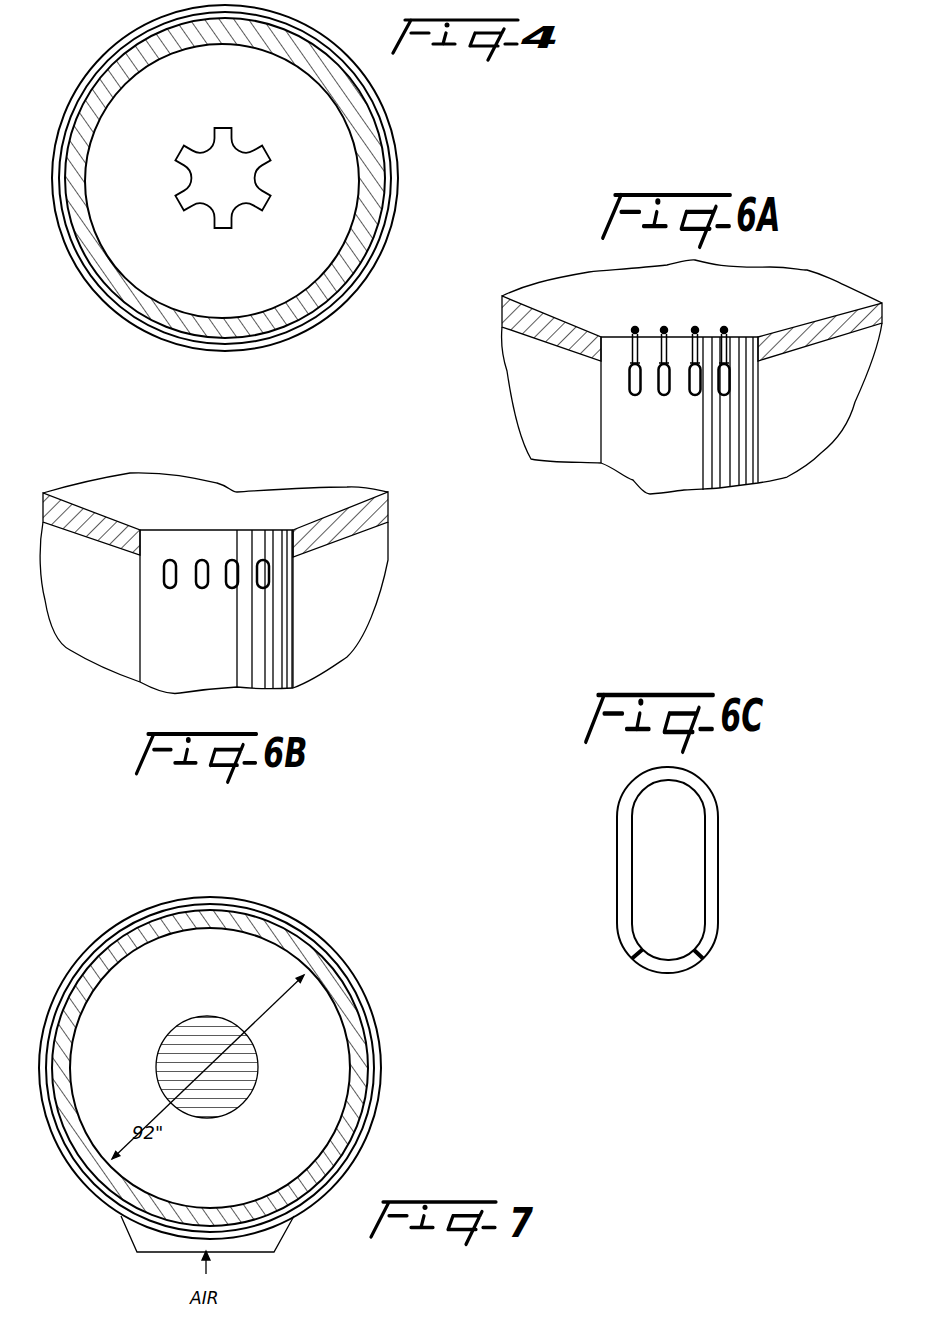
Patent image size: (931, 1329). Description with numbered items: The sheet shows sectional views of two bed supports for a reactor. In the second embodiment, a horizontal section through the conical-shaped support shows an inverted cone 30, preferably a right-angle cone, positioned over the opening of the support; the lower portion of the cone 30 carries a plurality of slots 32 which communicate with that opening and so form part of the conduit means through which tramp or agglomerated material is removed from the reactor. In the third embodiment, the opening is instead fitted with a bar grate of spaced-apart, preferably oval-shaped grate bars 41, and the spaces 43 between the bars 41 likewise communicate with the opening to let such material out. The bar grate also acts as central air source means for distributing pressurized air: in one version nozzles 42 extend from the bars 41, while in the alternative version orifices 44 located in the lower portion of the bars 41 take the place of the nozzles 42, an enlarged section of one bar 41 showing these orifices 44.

In FIG. 4, the inverted cone 30 is at (200, 188).
In FIG. 4, the slots 32 is at (182, 175).
In FIG. 6A, the grate bars 41 is at (630, 376).
In FIG. 6B, the grate bars 41 is at (170, 587).
In FIG. 6C, the grate bars 41 is at (692, 840).
In FIG. 7, the grate bars 41 is at (253, 1040).
In FIG. 6A, the nozzles 42 is at (731, 333).
In FIG. 6A, the spaces 43 is at (649, 374).
In FIG. 6B, the spaces 43 is at (247, 580).
In FIG. 7, the spaces 43 is at (252, 1067).
In FIG. 6C, the orifices 44 is at (703, 957).